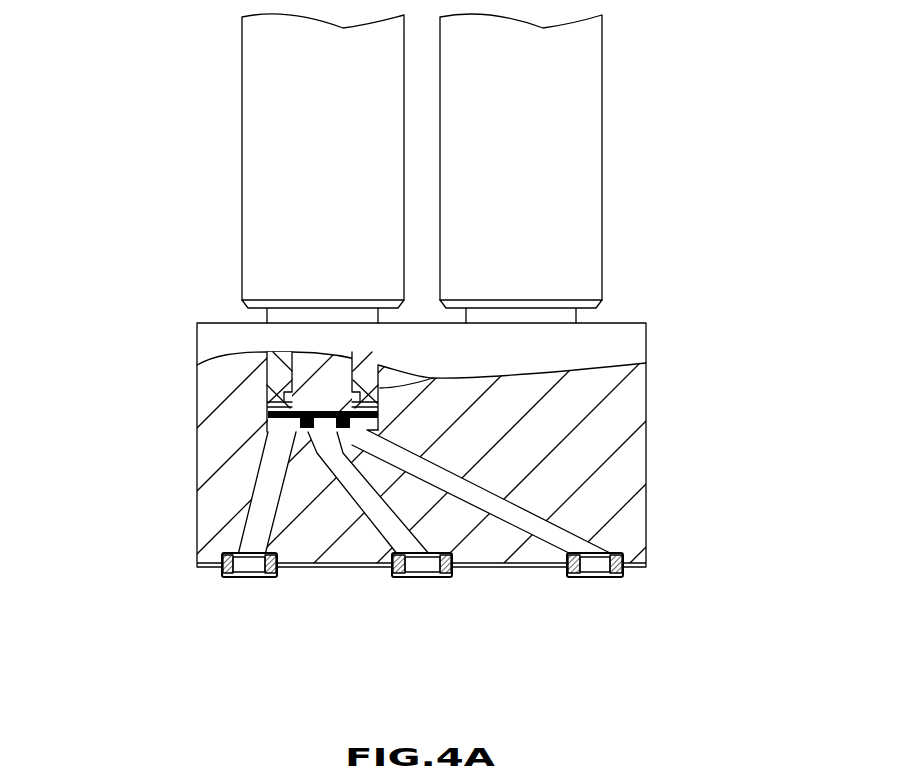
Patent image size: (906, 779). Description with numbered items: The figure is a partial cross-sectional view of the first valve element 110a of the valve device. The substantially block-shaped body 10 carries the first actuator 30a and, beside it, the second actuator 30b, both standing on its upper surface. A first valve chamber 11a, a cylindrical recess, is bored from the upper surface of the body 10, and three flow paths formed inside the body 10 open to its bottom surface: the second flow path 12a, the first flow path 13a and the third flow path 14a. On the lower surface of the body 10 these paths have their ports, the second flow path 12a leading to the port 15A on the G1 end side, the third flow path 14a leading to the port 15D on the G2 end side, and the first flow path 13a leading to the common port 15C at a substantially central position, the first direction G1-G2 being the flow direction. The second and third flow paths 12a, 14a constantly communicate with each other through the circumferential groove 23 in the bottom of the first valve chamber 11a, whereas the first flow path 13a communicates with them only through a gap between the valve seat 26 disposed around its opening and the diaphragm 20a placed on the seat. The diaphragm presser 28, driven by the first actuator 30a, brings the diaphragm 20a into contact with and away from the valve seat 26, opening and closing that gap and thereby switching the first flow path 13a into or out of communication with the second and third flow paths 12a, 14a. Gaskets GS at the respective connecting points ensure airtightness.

The first actuator 30a is at (262, 162).
The second actuator 30b is at (588, 162).
The first valve element 110a is at (206, 255).
The body 10 is at (635, 343).
The first valve chamber 11a is at (433, 378).
The circumferential groove 23 is at (520, 438).
The diaphragm presser 28 is at (267, 372).
The diaphragm 20a is at (273, 408).
The valve seat 26 is at (277, 430).
The second flow path 12a is at (265, 497).
The first flow path 13a is at (343, 477).
The third flow path 14a is at (520, 513).
The port 15A is at (245, 580).
The common port 15C is at (417, 580).
The port 15D is at (597, 580).
The gasket GS is at (222, 580).
The one end side in first direction G1 is at (346, 654).
The other end side in first direction G2 is at (424, 649).